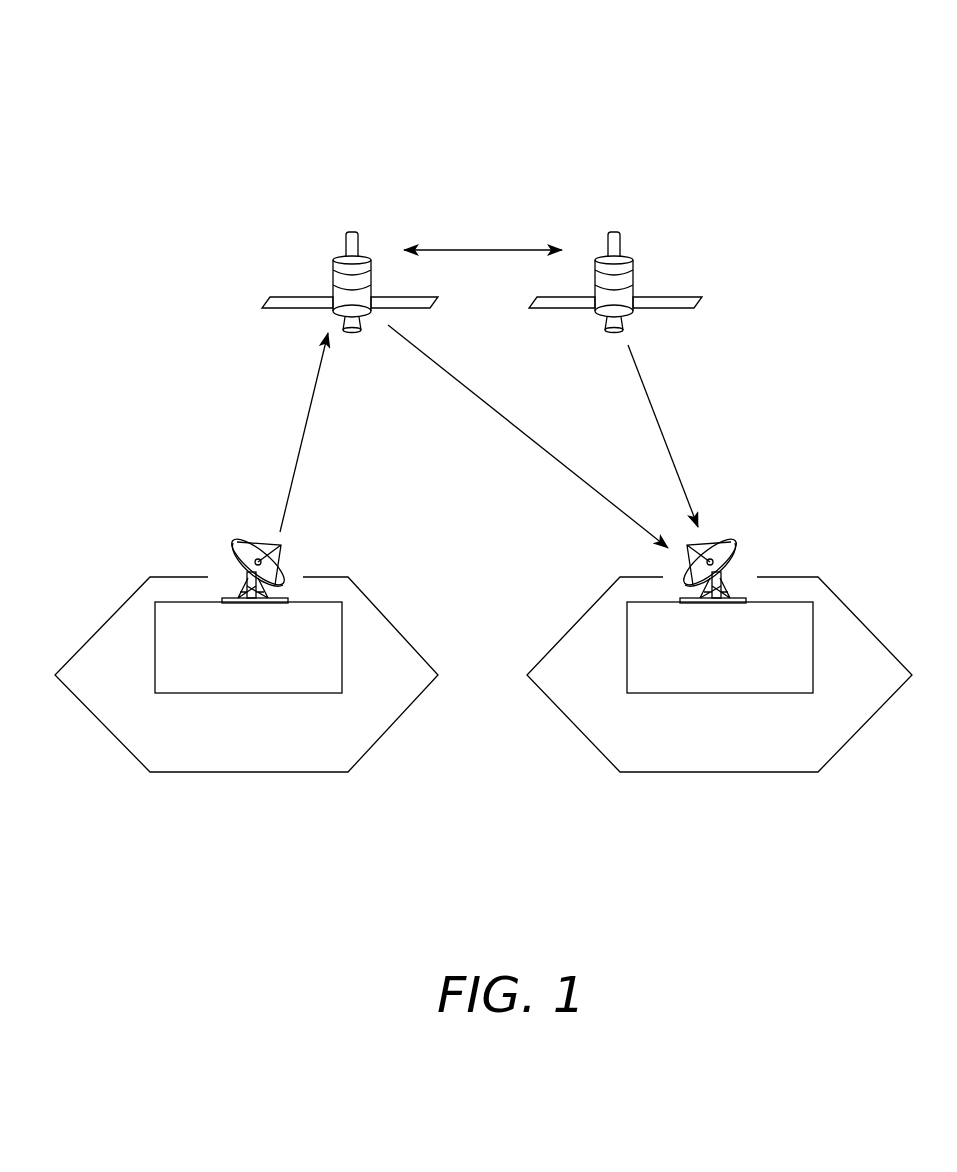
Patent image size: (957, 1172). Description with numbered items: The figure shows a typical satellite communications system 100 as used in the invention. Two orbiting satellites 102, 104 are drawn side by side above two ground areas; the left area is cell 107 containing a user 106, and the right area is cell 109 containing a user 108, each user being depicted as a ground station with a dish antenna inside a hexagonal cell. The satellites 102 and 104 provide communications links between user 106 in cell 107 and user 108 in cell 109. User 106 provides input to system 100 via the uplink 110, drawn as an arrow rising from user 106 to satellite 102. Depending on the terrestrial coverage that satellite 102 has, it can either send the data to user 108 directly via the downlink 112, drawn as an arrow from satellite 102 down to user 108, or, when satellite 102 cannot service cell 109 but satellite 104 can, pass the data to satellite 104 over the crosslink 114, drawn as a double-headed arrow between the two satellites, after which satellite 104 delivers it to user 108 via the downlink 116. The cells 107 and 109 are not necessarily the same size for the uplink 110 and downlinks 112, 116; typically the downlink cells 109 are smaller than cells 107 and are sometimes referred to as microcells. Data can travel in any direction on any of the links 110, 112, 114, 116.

The system 100 is at (460, 83).
The satellite 102 is at (303, 257).
The satellite 104 is at (658, 252).
The user 106 is at (155, 645).
The cell 107 is at (249, 773).
The user 108 is at (813, 637).
The cell 109 is at (780, 773).
The uplink 110 is at (298, 442).
The downlink 112 is at (535, 442).
The crosslink 114 is at (503, 247).
The downlink 116 is at (657, 417).